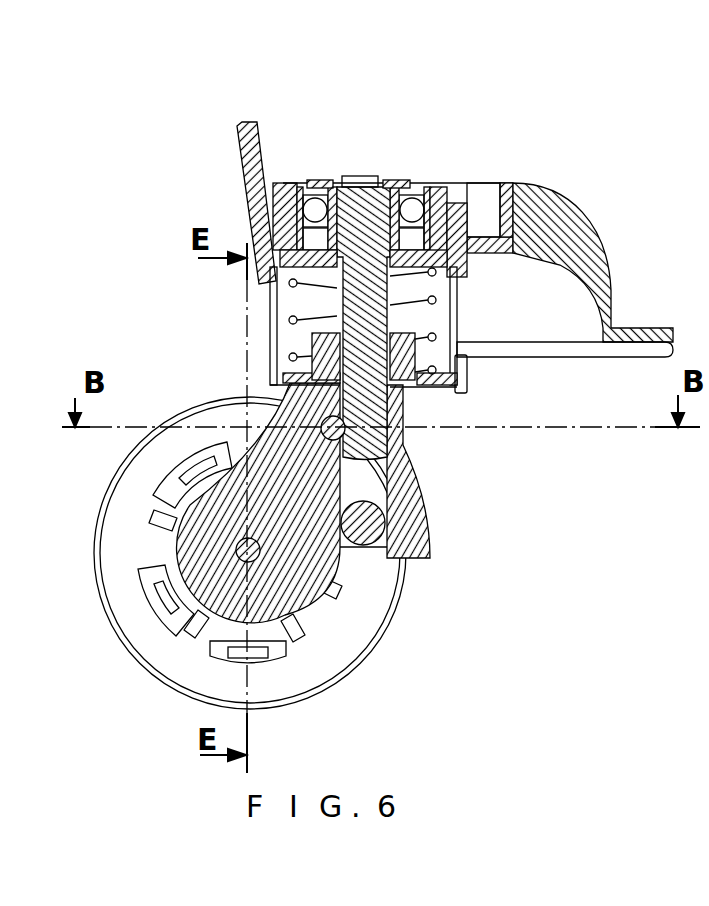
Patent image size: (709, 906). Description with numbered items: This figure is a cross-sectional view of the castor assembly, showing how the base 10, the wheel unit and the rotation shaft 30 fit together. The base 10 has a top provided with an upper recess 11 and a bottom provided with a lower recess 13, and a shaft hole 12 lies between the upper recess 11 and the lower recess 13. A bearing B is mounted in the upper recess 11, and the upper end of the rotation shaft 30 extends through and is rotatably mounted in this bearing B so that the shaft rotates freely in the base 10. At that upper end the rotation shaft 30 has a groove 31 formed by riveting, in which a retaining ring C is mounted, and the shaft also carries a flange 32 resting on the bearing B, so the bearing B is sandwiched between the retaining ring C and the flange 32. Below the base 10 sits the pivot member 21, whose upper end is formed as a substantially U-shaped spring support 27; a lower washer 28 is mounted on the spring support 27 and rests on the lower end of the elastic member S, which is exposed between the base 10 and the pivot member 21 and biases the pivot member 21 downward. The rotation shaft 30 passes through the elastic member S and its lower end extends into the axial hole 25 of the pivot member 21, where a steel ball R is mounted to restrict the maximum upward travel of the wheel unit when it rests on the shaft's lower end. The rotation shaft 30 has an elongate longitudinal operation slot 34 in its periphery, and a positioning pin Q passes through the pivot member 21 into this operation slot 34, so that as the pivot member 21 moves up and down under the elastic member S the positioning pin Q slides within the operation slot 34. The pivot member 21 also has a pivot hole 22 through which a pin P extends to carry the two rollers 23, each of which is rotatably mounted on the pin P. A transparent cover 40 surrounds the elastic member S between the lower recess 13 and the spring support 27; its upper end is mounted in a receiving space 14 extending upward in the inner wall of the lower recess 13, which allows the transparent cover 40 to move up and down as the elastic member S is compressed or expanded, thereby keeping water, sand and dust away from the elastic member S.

The base 10 is at (240, 140).
The upper recess 11 is at (282, 183).
The shaft hole 12 is at (430, 237).
The lower recess 13 is at (452, 272).
The receiving space 14 is at (450, 238).
The pivot member 21 is at (200, 525).
The pivot hole 22 is at (262, 548).
The rollers 23 is at (333, 658).
The axial hole 25 is at (367, 482).
The spring support 27 is at (457, 367).
The lower washer 28 is at (430, 382).
The rotation shaft 30 is at (363, 267).
The groove 31 is at (325, 183).
The flange 32 is at (337, 237).
The operation slot 34 is at (325, 355).
The transparent cover 40 is at (273, 300).
The bearing B is at (412, 210).
The retaining ring C is at (400, 185).
The elastic member S is at (440, 311).
The pin P is at (247, 557).
The positioning pin Q is at (330, 425).
The steel ball R is at (377, 527).